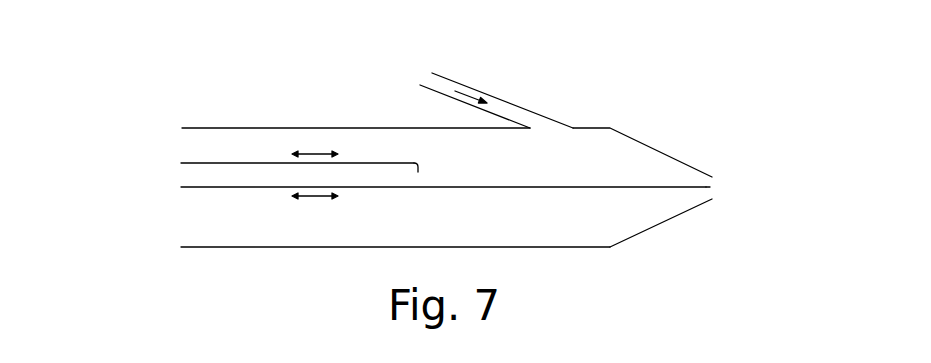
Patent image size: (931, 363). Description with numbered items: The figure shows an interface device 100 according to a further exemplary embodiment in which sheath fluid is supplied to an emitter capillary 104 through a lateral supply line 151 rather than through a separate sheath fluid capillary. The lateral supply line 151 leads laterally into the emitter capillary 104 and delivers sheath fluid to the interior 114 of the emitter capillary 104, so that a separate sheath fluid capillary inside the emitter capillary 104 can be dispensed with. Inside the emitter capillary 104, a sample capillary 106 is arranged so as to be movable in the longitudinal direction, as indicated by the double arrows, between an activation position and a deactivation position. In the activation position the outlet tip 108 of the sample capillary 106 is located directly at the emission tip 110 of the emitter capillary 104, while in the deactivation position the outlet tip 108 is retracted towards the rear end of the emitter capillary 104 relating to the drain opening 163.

The interface device 100 is at (142, 139).
The emitter capillary 104 is at (610, 128).
The sample capillary 106 is at (407, 160).
The outlet tip 108 is at (418, 172).
The emission tip 110 is at (713, 187).
The interior of the emitter capillary 114 is at (263, 145).
The lateral supply line 151 is at (510, 102).
The drain opening 163 is at (177, 213).